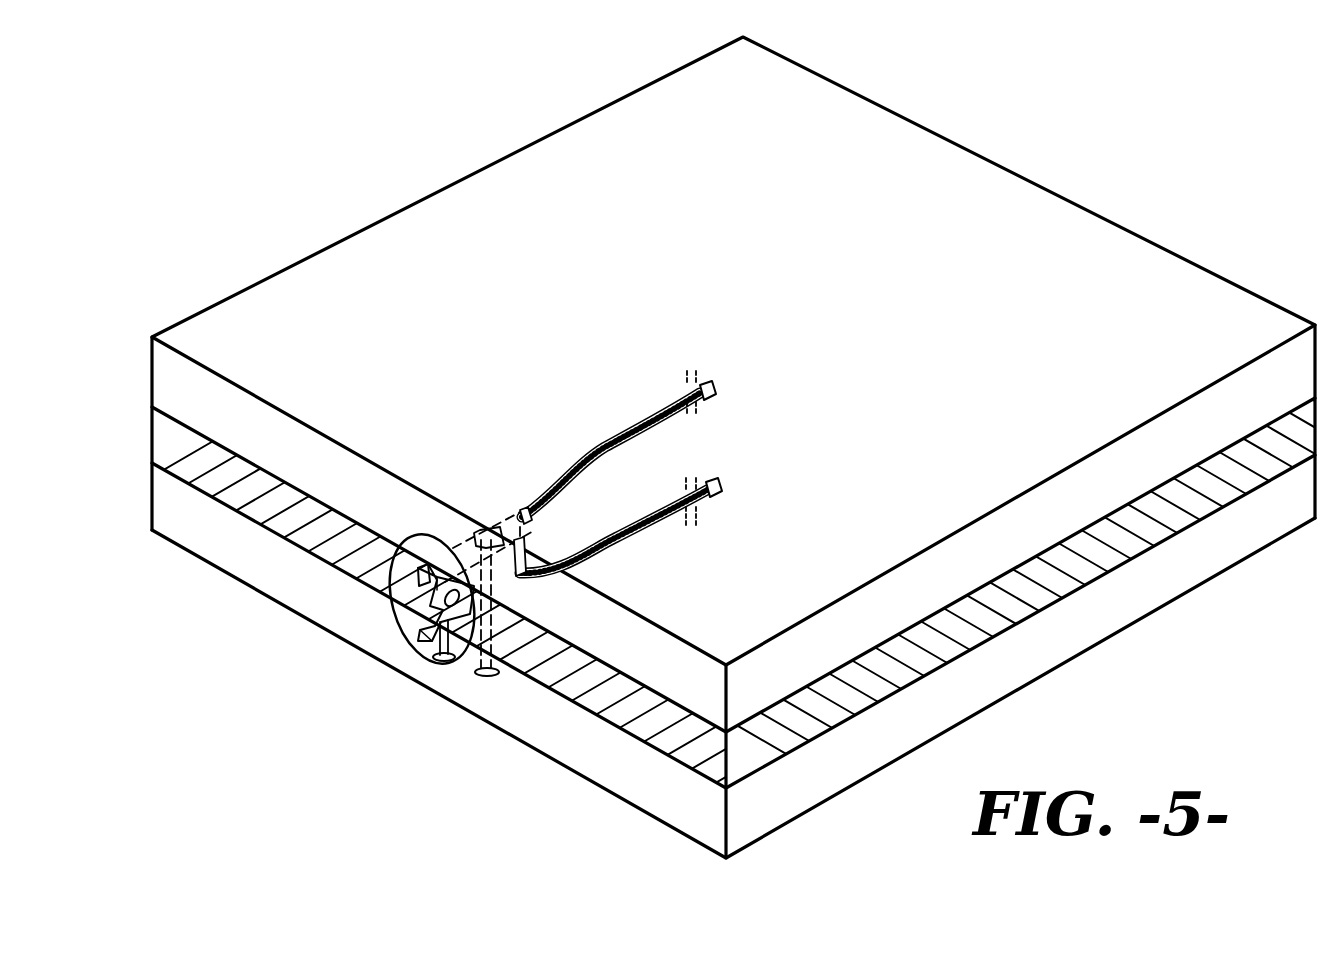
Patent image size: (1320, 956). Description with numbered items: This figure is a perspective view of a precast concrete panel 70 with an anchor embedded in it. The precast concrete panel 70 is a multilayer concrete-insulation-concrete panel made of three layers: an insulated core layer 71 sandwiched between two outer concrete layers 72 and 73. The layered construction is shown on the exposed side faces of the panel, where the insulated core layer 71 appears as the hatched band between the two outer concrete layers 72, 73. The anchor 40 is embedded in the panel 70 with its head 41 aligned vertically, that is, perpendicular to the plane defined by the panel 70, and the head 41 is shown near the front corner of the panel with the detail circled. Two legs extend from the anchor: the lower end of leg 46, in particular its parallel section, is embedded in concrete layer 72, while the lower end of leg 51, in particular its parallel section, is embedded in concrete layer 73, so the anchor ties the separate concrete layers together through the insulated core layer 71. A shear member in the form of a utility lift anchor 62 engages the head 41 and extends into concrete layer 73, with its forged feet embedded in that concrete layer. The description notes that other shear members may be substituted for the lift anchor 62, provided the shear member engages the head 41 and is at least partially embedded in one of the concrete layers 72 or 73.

The precast concrete panel 70 is at (448, 247).
The insulated core layer 71 is at (1040, 590).
The outer concrete layer 72 is at (1057, 515).
The outer concrete layer 73 is at (1222, 535).
The anchor 40 is at (397, 577).
The head 41 is at (395, 612).
The lift anchor 62 is at (455, 667).
The leg 46 is at (617, 433).
The leg 51 is at (648, 535).